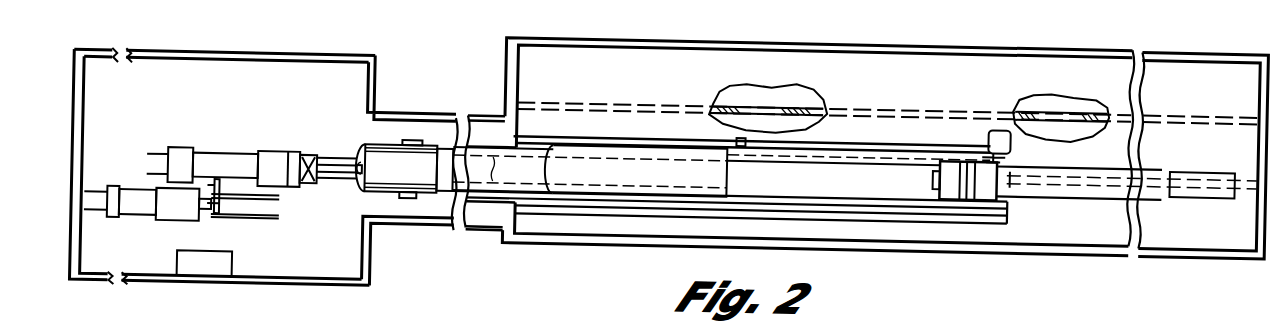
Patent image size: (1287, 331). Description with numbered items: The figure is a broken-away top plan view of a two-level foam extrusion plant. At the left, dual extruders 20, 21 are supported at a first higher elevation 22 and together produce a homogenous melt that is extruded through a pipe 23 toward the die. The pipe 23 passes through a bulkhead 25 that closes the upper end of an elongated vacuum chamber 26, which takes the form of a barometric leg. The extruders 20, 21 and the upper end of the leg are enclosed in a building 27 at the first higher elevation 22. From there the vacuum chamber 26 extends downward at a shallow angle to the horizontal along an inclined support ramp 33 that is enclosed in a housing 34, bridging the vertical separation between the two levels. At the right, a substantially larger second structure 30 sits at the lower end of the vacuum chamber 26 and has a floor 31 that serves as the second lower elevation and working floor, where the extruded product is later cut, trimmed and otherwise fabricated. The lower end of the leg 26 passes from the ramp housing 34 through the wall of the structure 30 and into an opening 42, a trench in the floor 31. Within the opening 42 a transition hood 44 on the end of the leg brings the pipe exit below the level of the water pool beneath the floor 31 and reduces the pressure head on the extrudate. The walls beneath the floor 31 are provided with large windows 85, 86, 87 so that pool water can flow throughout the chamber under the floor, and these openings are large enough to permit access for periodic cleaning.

The extruder 20 is at (216, 169).
The extruder 21 is at (140, 216).
The first higher elevation 22 is at (303, 264).
The pipe 23 is at (333, 171).
The bulkhead 25 is at (360, 191).
The vacuum chamber 26 is at (426, 146).
The building 27 is at (374, 60).
The second structure 30 is at (1010, 250).
The floor 31 is at (1103, 224).
The inclined support ramp 33 is at (483, 133).
The housing 34 is at (393, 233).
The opening 42 is at (930, 208).
The transition hood 44 is at (618, 176).
The window 85 is at (760, 105).
The window 86 is at (1052, 106).
The window 87 is at (745, 146).